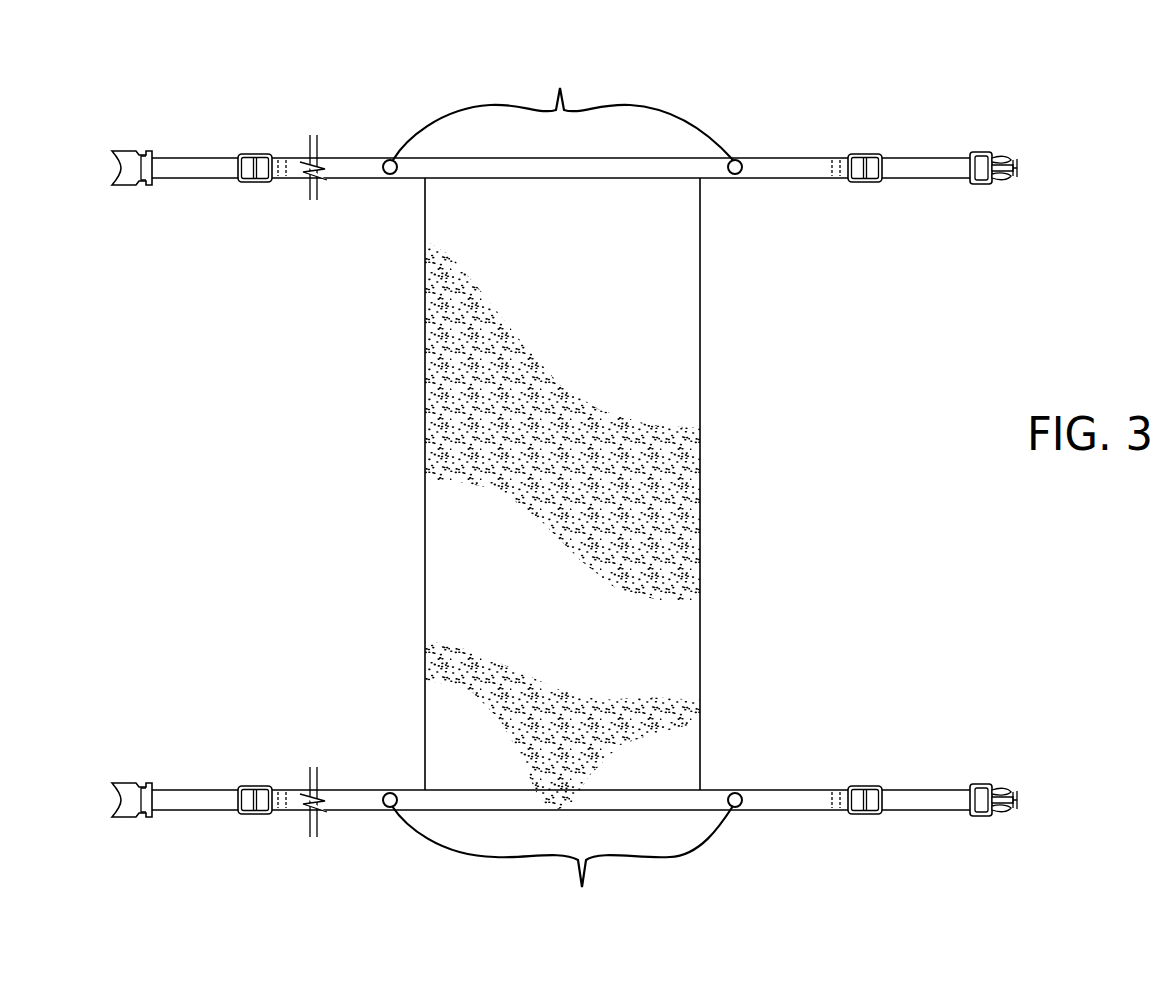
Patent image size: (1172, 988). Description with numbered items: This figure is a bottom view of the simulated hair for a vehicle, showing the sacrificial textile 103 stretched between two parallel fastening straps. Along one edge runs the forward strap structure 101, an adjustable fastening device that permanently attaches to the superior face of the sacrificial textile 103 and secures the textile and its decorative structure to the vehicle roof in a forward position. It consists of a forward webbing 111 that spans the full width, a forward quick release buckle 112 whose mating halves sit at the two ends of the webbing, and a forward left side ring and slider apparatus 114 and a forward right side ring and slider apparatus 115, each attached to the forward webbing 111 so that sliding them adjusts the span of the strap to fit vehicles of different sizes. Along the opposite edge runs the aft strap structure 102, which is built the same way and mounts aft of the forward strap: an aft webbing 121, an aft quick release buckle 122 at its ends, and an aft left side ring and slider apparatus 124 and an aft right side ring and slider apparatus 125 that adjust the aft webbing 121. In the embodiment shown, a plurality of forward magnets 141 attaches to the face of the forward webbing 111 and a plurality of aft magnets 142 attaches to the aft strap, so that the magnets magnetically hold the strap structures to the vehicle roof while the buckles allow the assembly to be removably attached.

The forward strap structure 101 is at (987, 148).
The aft strap structure 102 is at (1030, 798).
The sacrificial textile 103 is at (700, 440).
The forward webbing 111 is at (351, 180).
The forward quick release buckle 112 is at (131, 150).
The forward left side ring and slider apparatus 114 is at (868, 152).
The forward right side ring and slider apparatus 115 is at (243, 152).
The aft webbing 121 is at (774, 800).
The aft quick release buckle 122 is at (130, 785).
The aft left side ring and slider apparatus 124 is at (868, 820).
The aft right side ring and slider apparatus 125 is at (262, 815).
The plurality of forward magnets 141 is at (562, 109).
The plurality of aft magnets 142 is at (562, 864).